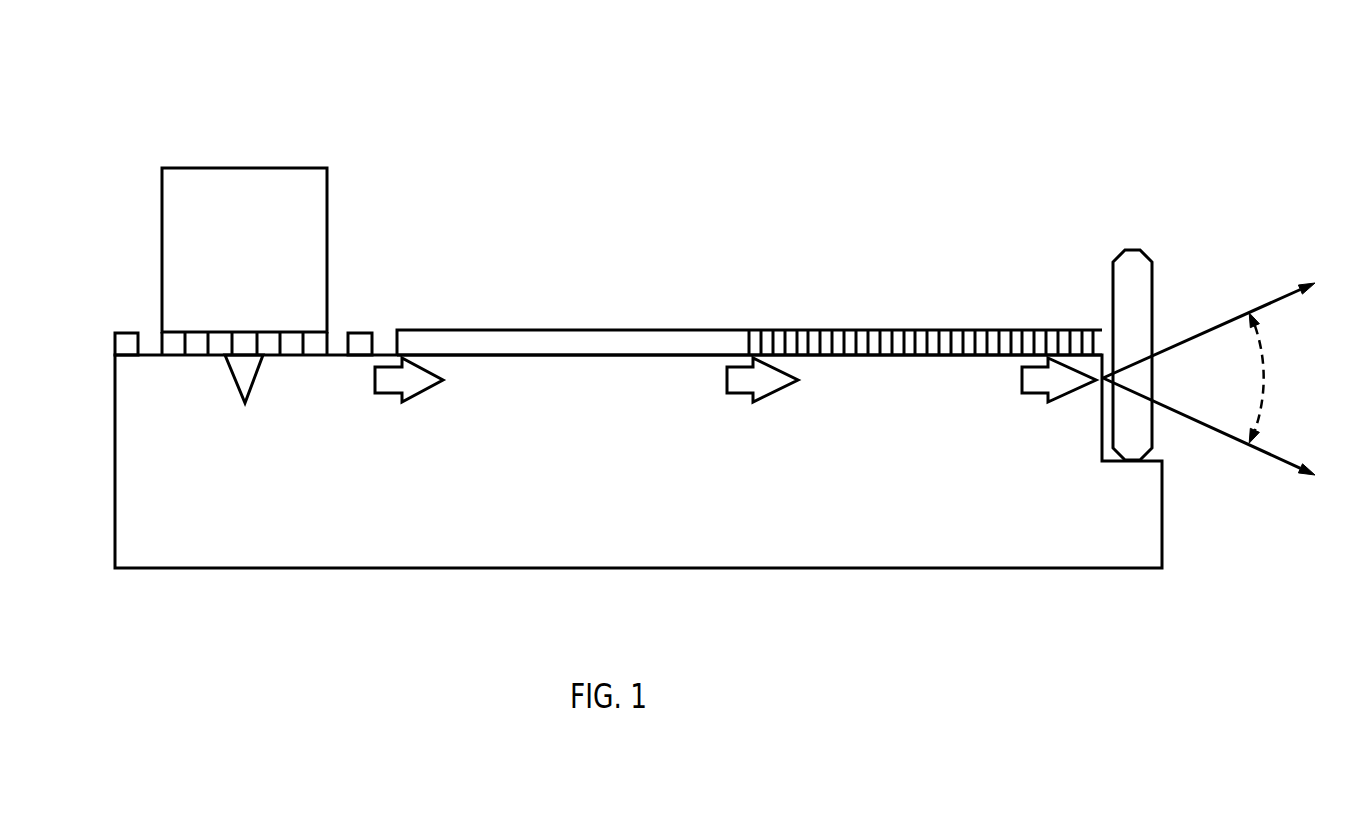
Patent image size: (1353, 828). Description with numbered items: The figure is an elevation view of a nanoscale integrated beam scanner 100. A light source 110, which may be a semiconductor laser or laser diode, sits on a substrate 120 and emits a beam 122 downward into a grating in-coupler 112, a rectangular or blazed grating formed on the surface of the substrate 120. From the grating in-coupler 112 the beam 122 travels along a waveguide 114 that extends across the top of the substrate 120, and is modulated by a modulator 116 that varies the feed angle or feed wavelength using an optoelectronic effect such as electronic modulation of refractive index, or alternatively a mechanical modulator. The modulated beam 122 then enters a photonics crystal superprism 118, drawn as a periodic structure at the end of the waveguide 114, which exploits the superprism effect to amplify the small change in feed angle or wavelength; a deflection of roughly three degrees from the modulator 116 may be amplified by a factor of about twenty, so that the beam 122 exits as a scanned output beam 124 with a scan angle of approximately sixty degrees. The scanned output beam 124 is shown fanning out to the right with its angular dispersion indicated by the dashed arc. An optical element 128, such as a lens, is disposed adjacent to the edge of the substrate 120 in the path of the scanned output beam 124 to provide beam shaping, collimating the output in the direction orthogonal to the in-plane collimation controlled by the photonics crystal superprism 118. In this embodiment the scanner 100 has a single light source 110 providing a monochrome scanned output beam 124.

The nanoscale integrated beam scanner 100 is at (1208, 145).
The light source 110 is at (200, 168).
The grating in-coupler 112 is at (362, 332).
The waveguide 114 is at (552, 395).
The modulator 116 is at (668, 330).
The photonics crystal superprism 118 is at (950, 330).
The substrate 120 is at (1103, 548).
The beam 122 is at (258, 378).
The scanned output beam 124 is at (1280, 300).
The optical element 128 is at (1152, 285).